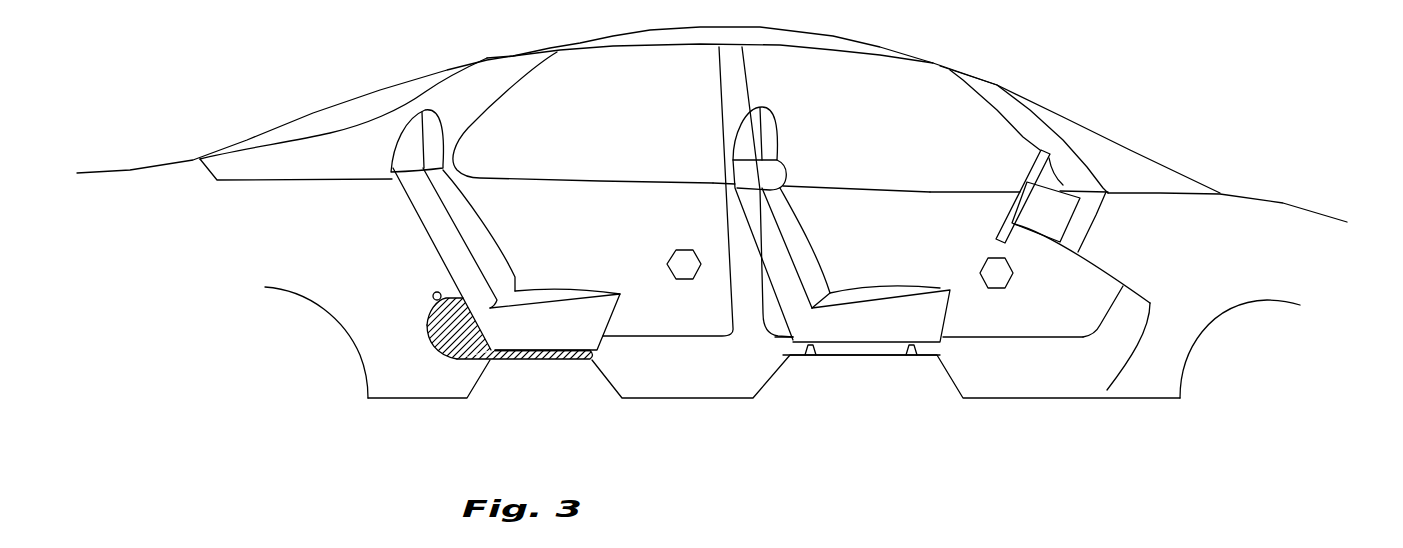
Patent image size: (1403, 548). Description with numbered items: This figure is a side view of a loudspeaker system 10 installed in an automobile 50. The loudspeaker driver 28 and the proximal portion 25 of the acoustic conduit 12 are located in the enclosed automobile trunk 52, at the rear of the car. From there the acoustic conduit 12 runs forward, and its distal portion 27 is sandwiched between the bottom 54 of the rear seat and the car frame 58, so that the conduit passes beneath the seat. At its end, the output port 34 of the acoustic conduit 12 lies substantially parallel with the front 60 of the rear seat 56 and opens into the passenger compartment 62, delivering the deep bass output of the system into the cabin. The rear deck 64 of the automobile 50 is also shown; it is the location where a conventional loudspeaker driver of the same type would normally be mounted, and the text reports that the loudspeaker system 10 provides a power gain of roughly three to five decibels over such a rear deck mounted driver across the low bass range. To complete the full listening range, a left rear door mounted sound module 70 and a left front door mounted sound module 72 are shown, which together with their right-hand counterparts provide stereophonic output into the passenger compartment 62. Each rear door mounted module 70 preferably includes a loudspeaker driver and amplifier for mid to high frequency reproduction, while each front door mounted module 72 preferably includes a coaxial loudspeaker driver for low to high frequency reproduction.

The automobile 50 is at (1083, 72).
The automobile trunk 52 is at (307, 247).
The rear deck 64 is at (323, 180).
The passenger compartment 62 is at (648, 232).
The front of rear seat 60 is at (617, 326).
The output port 34 is at (595, 353).
The rear seat 56 is at (496, 247).
The bottom of rear seat 54 is at (532, 350).
The loudspeaker system 10 is at (519, 308).
The acoustic conduit 12 is at (419, 340).
The proximal portion 25 is at (447, 352).
The loudspeaker driver 28 is at (432, 300).
The car frame 58 is at (512, 360).
The distal portion 27 is at (547, 357).
The rear door mounted sound module 70 is at (690, 248).
The front door mounted sound module 72 is at (1013, 268).